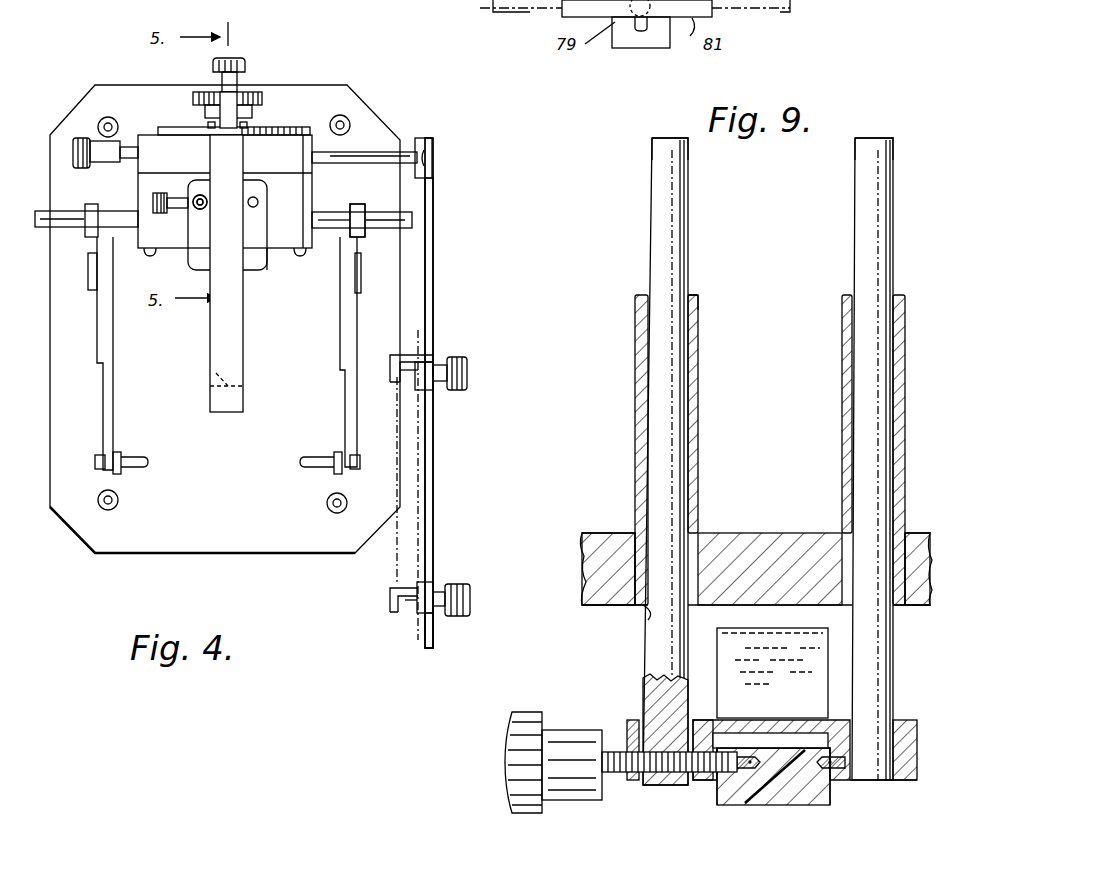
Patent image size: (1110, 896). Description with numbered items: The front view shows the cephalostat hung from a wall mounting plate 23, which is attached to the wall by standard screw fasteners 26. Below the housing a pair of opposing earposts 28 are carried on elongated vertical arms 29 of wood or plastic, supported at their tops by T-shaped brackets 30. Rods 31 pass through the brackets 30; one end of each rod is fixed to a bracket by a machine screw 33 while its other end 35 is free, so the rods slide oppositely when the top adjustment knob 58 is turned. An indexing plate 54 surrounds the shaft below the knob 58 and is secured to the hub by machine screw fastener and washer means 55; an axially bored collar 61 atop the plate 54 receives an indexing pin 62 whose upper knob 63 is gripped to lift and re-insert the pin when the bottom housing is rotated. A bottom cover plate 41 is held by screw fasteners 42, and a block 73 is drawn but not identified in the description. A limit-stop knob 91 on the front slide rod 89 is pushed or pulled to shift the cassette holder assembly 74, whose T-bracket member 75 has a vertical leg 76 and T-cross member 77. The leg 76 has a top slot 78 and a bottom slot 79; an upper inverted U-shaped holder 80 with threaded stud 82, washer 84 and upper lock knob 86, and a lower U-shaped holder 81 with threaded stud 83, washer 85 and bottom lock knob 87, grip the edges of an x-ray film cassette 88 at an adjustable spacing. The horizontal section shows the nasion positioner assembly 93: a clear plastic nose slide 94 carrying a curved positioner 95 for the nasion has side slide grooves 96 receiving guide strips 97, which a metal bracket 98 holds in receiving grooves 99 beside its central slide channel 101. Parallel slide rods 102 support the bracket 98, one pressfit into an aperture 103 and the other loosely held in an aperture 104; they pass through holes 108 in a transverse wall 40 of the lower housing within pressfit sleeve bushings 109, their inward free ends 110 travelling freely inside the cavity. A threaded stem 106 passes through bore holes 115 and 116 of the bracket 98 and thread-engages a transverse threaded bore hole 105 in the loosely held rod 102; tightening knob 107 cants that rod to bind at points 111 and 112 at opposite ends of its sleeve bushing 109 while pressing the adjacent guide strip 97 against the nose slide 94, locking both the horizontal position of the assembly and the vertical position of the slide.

In FIG. 4, the wall mounting plate 23 is at (245, 548).
In FIG. 4, the screw fasteners 26 is at (112, 117).
In FIG. 4, the earposts 28 is at (142, 464).
In FIG. 4, the vertical arms 29 is at (113, 343).
In FIG. 4, the T-shaped brackets 30 is at (90, 256).
In FIG. 4, the rods 31 is at (70, 211).
In FIG. 4, the machine screw 33 is at (367, 224).
In FIG. 4, the free end 35 is at (43, 228).
In FIG. 9, the transverse sidewalls 40 is at (758, 532).
In FIG. 4, the bottom cover plate 41 is at (265, 270).
In FIG. 4, the screw fasteners 42 is at (150, 254).
In FIG. 4, the indexing plate 54 is at (298, 127).
In FIG. 4, the machine screw fastener and washer means 55 is at (247, 125).
In FIG. 4, the top adjustment knob 58 is at (262, 98).
In FIG. 4, the collar 61 is at (220, 112).
In FIG. 4, the indexing pin 62 is at (228, 90).
In FIG. 4, the upper knob 63 is at (246, 66).
In FIG. 4, the carriage block 73 is at (170, 175).
In FIG. 4, the cassette holder assembly 74 is at (440, 443).
In FIG. 4, the T-bracket member 75 is at (440, 184).
In FIG. 4, the vertical leg 76 is at (434, 256).
In FIG. 4, the T-cross member 77 is at (422, 138).
In FIG. 4, the top slot 78 is at (433, 322).
In FIG. 4, the bottom slot 79 is at (434, 635).
In FIG. 4, the upper inverted U-shaped holder 80 is at (393, 355).
In FIG. 4, the lower U-shaped holder 81 is at (390, 606).
In FIG. 4, the threaded stud 82 is at (415, 378).
In FIG. 4, the threaded stud 83 is at (424, 601).
In FIG. 4, the washer 84 is at (430, 364).
In FIG. 4, the washer 85 is at (432, 590).
In FIG. 4, the upper lock knob 86 is at (469, 368).
In FIG. 4, the bottom lock knob 87 is at (471, 600).
In FIG. 4, the x-ray film cassette 88 is at (419, 501).
In FIG. 4, the slide rods 89 is at (366, 152).
In FIG. 4, the limit-stop knob 91 is at (82, 138).
In FIG. 4, the nasion positioner assembly 93 is at (243, 330).
In FIG. 9, the nose slide 94 is at (780, 800).
In FIG. 4, the positioner 95 is at (216, 373).
In FIG. 9, the positioner 95 is at (820, 645).
In FIG. 9, the side slide grooves 96 is at (732, 800).
In FIG. 9, the guide strips 97 is at (740, 770).
In FIG. 4, the bracket 98 is at (262, 225).
In FIG. 9, the bracket 98 is at (905, 722).
In FIG. 9, the receiving grooves 99 is at (735, 768).
In FIG. 9, the central slide channel 101 is at (778, 740).
In FIG. 4, the slide rods 102 is at (205, 199).
In FIG. 9, the slide rods 102 is at (858, 230).
In FIG. 4, the aperture 103 is at (208, 206).
In FIG. 9, the aperture 103 is at (900, 782).
In FIG. 4, the aperture 104 is at (201, 212).
In FIG. 9, the aperture 104 is at (645, 712).
In FIG. 9, the threaded transverse bore hole 105 is at (668, 774).
In FIG. 9, the threaded stem 106 is at (614, 778).
In FIG. 4, the knob 107 is at (160, 213).
In FIG. 9, the knob 107 is at (506, 795).
In FIG. 9, the holes 108 is at (637, 540).
In FIG. 9, the sleeve bushings 109 is at (842, 387).
In FIG. 9, the inward free ends 110 is at (650, 150).
In FIG. 9, the binding point 111 is at (652, 612).
In FIG. 9, the binding point 112 is at (702, 296).
In FIG. 9, the bore hole 115 is at (627, 735).
In FIG. 9, the bore hole 116 is at (713, 740).